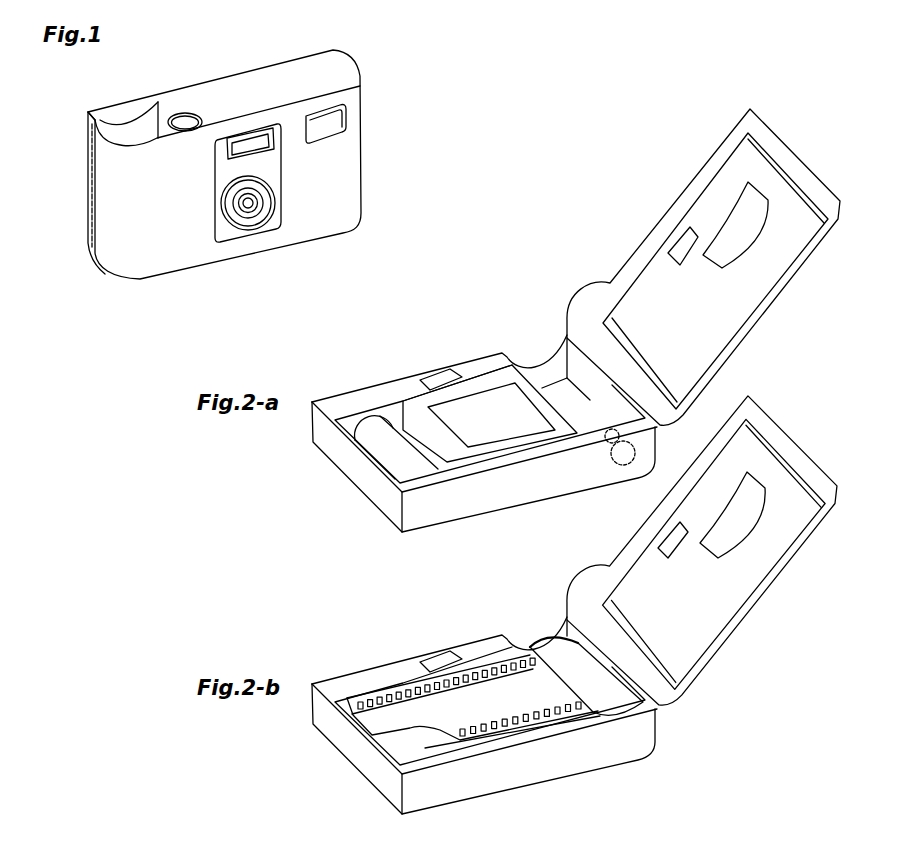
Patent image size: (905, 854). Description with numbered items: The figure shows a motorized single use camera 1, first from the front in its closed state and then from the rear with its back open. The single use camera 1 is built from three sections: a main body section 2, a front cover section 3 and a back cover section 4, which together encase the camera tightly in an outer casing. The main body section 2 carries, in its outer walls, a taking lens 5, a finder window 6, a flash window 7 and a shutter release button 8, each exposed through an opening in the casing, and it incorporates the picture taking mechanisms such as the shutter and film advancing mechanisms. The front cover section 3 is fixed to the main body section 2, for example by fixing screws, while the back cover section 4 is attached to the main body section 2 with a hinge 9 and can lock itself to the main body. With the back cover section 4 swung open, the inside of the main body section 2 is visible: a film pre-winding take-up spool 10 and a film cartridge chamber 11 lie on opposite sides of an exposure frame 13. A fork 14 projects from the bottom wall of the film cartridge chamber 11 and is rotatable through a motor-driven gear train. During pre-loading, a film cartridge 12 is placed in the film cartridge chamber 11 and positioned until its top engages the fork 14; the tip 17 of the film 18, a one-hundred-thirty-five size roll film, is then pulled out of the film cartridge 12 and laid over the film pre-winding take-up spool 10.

In FIG. 1, the single use camera 1 is at (347, 62).
In FIG. 2A, the main body section 2 is at (487, 363).
In FIG. 2B, the main body section 2 is at (390, 786).
In FIG. 1, the front cover section 3 is at (330, 199).
In FIG. 1, the back cover section 4 is at (300, 61).
In FIG. 2A, the back cover section 4 is at (660, 282).
In FIG. 2B, the back cover section 4 is at (702, 550).
In FIG. 1, the taking lens 5 is at (247, 206).
In FIG. 1, the finder window 6 is at (254, 146).
In FIG. 1, the flash window 7 is at (328, 123).
In FIG. 1, the shutter release button 8 is at (183, 117).
In FIG. 1, the hinge 9 is at (90, 225).
In FIG. 2A, the film pre-winding take-up spool 10 is at (380, 447).
In FIG. 2A, the film cartridge chamber 11 is at (574, 404).
In FIG. 2B, the film cartridge 12 is at (603, 692).
In FIG. 2A, the exposure frame 13 is at (487, 423).
In FIG. 2A, the fork 14 is at (613, 461).
In FIG. 2B, the tip 17 is at (393, 713).
In FIG. 2B, the film 18 is at (507, 714).